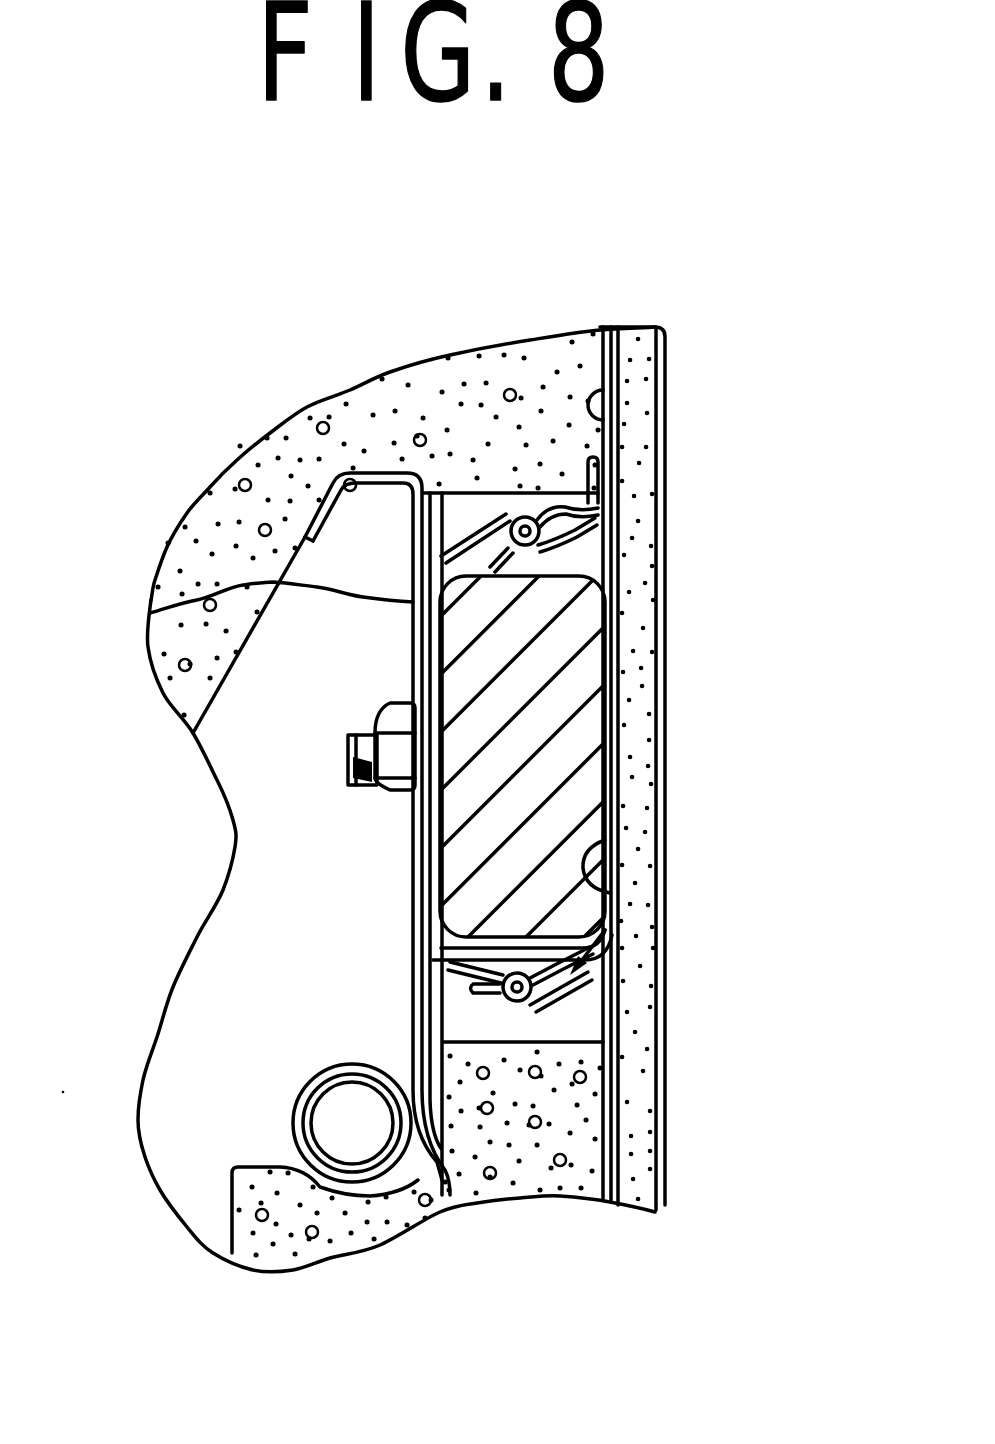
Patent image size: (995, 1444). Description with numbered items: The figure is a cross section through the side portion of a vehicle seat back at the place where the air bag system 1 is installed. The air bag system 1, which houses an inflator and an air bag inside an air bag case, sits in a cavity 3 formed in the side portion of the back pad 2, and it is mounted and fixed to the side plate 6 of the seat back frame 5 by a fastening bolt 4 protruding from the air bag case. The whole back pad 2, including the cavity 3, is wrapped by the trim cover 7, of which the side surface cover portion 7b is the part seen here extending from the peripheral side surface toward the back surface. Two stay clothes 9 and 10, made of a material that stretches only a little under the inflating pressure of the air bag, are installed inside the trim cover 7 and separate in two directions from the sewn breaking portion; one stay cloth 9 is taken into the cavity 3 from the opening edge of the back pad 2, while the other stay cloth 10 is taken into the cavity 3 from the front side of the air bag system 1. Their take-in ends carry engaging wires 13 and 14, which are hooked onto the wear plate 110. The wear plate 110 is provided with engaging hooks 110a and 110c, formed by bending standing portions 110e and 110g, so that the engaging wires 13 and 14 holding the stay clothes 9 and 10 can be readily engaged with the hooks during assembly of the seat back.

The air bag system 1 is at (597, 780).
The back pad 2 is at (306, 390).
The cavity 3 is at (593, 1040).
The fastening bolt 4 is at (348, 758).
The seat back frame 5 is at (317, 1077).
The side plate 6 is at (150, 613).
The trim cover 7 is at (684, 1128).
The side surface cover portion 7b is at (668, 462).
The stay cloth 9 is at (620, 385).
The stay cloth 10 is at (605, 840).
The engaging wire 13 is at (523, 517).
The engaging wire 14 is at (517, 1010).
The wear plate 110 is at (473, 651).
The engaging hook 110a is at (604, 520).
The engaging hook 110c is at (567, 995).
The standing portion 110e is at (463, 543).
The standing portion 110g is at (450, 970).